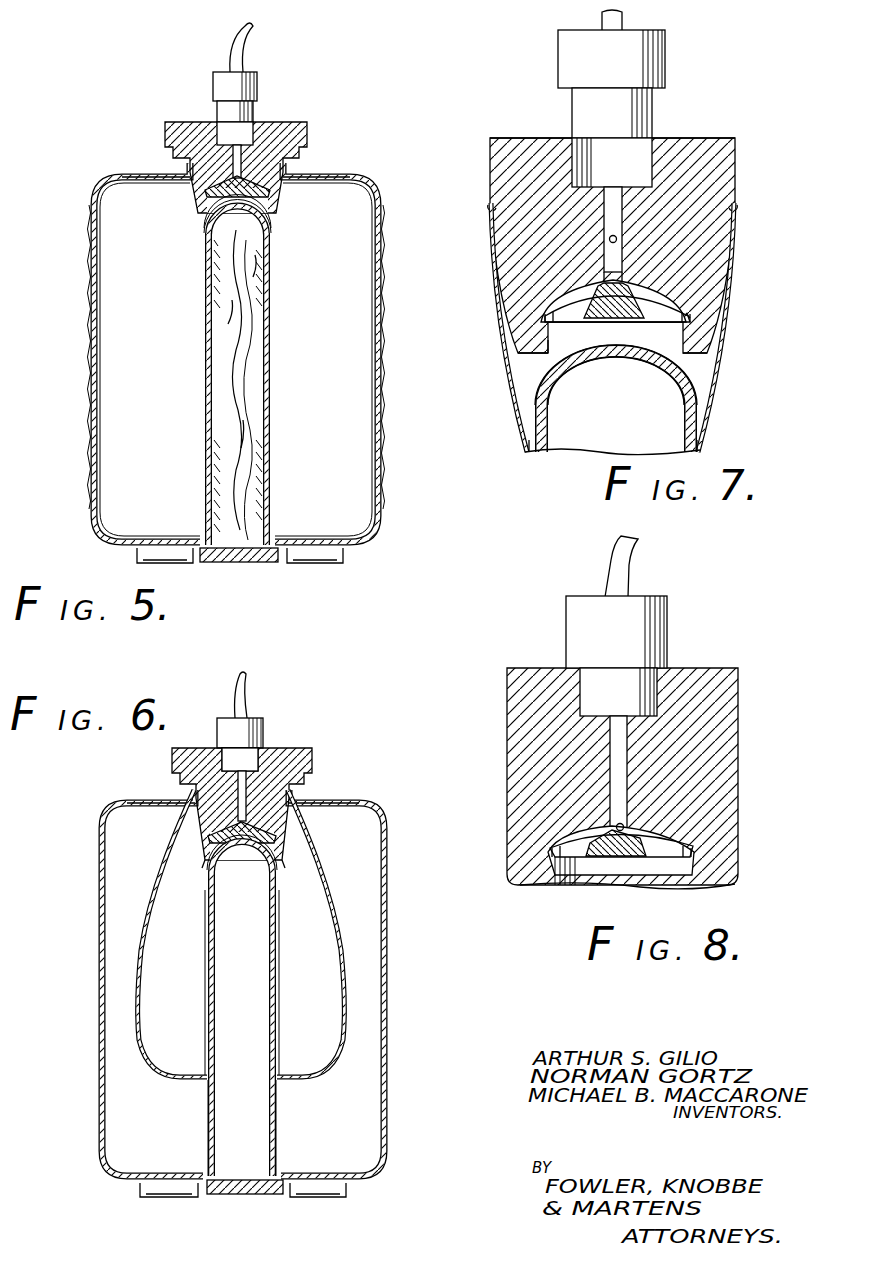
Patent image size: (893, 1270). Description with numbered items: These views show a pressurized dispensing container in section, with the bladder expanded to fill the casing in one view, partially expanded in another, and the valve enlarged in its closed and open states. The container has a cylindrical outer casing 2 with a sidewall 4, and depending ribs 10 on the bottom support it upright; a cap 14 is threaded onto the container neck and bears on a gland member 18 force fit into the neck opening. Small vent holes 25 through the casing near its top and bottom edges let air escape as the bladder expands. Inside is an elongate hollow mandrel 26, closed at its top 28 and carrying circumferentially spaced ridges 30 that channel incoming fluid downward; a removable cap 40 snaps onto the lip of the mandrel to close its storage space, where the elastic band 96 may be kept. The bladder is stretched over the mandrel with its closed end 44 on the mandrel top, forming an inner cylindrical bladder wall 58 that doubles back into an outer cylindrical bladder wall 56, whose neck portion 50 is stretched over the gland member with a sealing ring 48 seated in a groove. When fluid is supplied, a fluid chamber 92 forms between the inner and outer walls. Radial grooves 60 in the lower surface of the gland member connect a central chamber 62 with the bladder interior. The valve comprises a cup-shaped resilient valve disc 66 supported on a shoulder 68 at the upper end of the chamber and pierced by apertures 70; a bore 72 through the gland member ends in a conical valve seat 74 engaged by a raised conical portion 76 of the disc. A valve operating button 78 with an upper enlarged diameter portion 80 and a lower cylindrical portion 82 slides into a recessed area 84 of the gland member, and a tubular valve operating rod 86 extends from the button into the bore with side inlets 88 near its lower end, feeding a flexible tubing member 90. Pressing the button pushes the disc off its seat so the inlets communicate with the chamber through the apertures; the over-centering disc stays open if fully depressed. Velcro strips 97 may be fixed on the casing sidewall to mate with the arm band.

In FIG. 5, the outer shell or casing 2 is at (387, 524).
In FIG. 6, the outer shell or casing 2 is at (92, 837).
In FIG. 5, the sidewall 4 is at (382, 445).
In FIG. 6, the sidewall 4 is at (388, 990).
In FIG. 5, the depending ribs 10 is at (314, 562).
In FIG. 6, the depending ribs 10 is at (298, 1194).
In FIG. 6, the cap 14 is at (190, 748).
In FIG. 7, the gland member 18 is at (490, 155).
In FIG. 5, the vent holes 25 is at (358, 180).
In FIG. 6, the vent holes 25 is at (114, 815).
In FIG. 5, the mandrel 26 is at (272, 396).
In FIG. 6, the mandrel 26 is at (272, 940).
In FIG. 7, the mandrel 26 is at (550, 427).
In FIG. 7, the mandrel top 28 is at (638, 362).
In FIG. 6, the ridges or flutes 30 is at (280, 1113).
In FIG. 5, the removable cap 40 is at (248, 560).
In FIG. 6, the removable cap 40 is at (236, 1192).
In FIG. 7, the closed end of bladder 44 is at (600, 355).
In FIG. 7, the sealing ring 48 is at (488, 210).
In FIG. 7, the neck portion of bladder 50 is at (735, 330).
In FIG. 5, the outer cylindrical bladder wall 56 is at (373, 192).
In FIG. 6, the outer cylindrical bladder wall 56 is at (330, 866).
In FIG. 7, the outer cylindrical bladder wall 56 is at (705, 443).
In FIG. 5, the inner cylindrical bladder wall 58 is at (272, 465).
In FIG. 6, the inner cylindrical bladder wall 58 is at (277, 912).
In FIG. 7, the inner cylindrical bladder wall 58 is at (705, 432).
In FIG. 6, the radial grooves 60 is at (206, 860).
In FIG. 7, the radial grooves 60 is at (515, 380).
In FIG. 7, the central chamber 62 is at (550, 348).
In FIG. 8, the central chamber 62 is at (558, 886).
In FIG. 5, the valve disc 66 is at (260, 190).
In FIG. 6, the valve disc 66 is at (240, 842).
In FIG. 7, the valve disc 66 is at (545, 316).
In FIG. 8, the valve disc 66 is at (618, 866).
In FIG. 7, the shoulder 68 is at (680, 318).
In FIG. 7, the apertures 70 is at (560, 316).
In FIG. 8, the apertures 70 is at (575, 862).
In FIG. 7, the bore 72 is at (618, 266).
In FIG. 7, the conical valve seat 74 is at (600, 288).
In FIG. 8, the conical valve seat 74 is at (605, 828).
In FIG. 7, the raised conical portion 76 is at (616, 312).
In FIG. 5, the valve operating button 78 is at (212, 80).
In FIG. 6, the valve operating button 78 is at (220, 728).
In FIG. 7, the valve operating button 78 is at (672, 51).
In FIG. 8, the valve operating button 78 is at (570, 622).
In FIG. 7, the upper enlarged diameter portion 80 is at (660, 70).
In FIG. 7, the lower cylindrical portion 82 is at (650, 112).
In FIG. 7, the recessed area 84 is at (655, 150).
In FIG. 7, the valve operating rod 86 is at (616, 158).
In FIG. 8, the valve operating rod 86 is at (618, 760).
In FIG. 7, the side inlets 88 is at (617, 240).
In FIG. 8, the side inlets 88 is at (615, 830).
In FIG. 5, the flexible tubing member 90 is at (236, 31).
In FIG. 6, the flexible tubing member 90 is at (236, 687).
In FIG. 7, the flexible tubing member 90 is at (602, 16).
In FIG. 8, the flexible tubing member 90 is at (612, 550).
In FIG. 5, the fluid chamber 92 is at (345, 222).
In FIG. 6, the fluid chamber 92 is at (318, 1060).
In FIG. 5, the elastic band 96 is at (225, 396).
In FIG. 5, the Velcro strips 97 is at (87, 250).